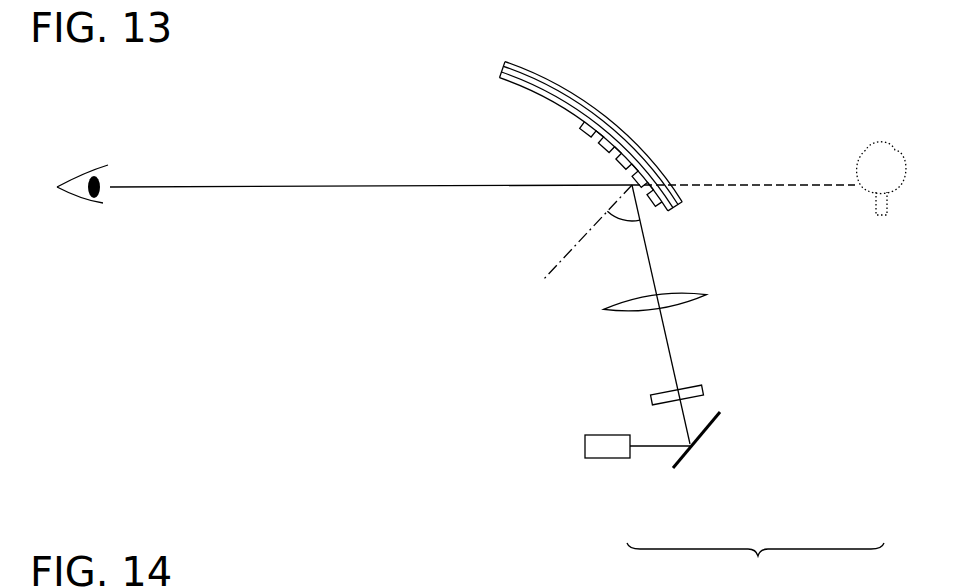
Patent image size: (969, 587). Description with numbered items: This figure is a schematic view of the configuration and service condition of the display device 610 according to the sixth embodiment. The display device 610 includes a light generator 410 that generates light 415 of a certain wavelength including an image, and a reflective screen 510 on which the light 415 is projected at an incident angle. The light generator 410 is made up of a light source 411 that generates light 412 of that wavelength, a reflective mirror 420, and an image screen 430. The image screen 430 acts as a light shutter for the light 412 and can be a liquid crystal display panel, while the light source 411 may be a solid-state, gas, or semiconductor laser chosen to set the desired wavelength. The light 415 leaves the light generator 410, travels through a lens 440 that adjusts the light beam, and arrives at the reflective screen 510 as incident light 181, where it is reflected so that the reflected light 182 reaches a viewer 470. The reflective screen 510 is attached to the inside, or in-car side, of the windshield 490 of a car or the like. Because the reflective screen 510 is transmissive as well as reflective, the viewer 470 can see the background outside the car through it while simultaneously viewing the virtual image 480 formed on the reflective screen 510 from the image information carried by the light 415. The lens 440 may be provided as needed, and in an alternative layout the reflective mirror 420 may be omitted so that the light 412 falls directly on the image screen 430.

The viewer 470 is at (80, 181).
The reflected light 182 is at (405, 183).
The image 480 is at (872, 148).
The display device 610 is at (429, 82).
The windshield 490 is at (556, 86).
The reflective screen 510 is at (580, 130).
The incident light 181 is at (643, 255).
The lens 440 is at (690, 304).
The light 415 is at (668, 353).
The image screen 430 is at (704, 391).
The light 412 is at (652, 442).
The light source 411 is at (608, 458).
The reflective mirror 420 is at (697, 446).
The light generator 410 is at (755, 565).